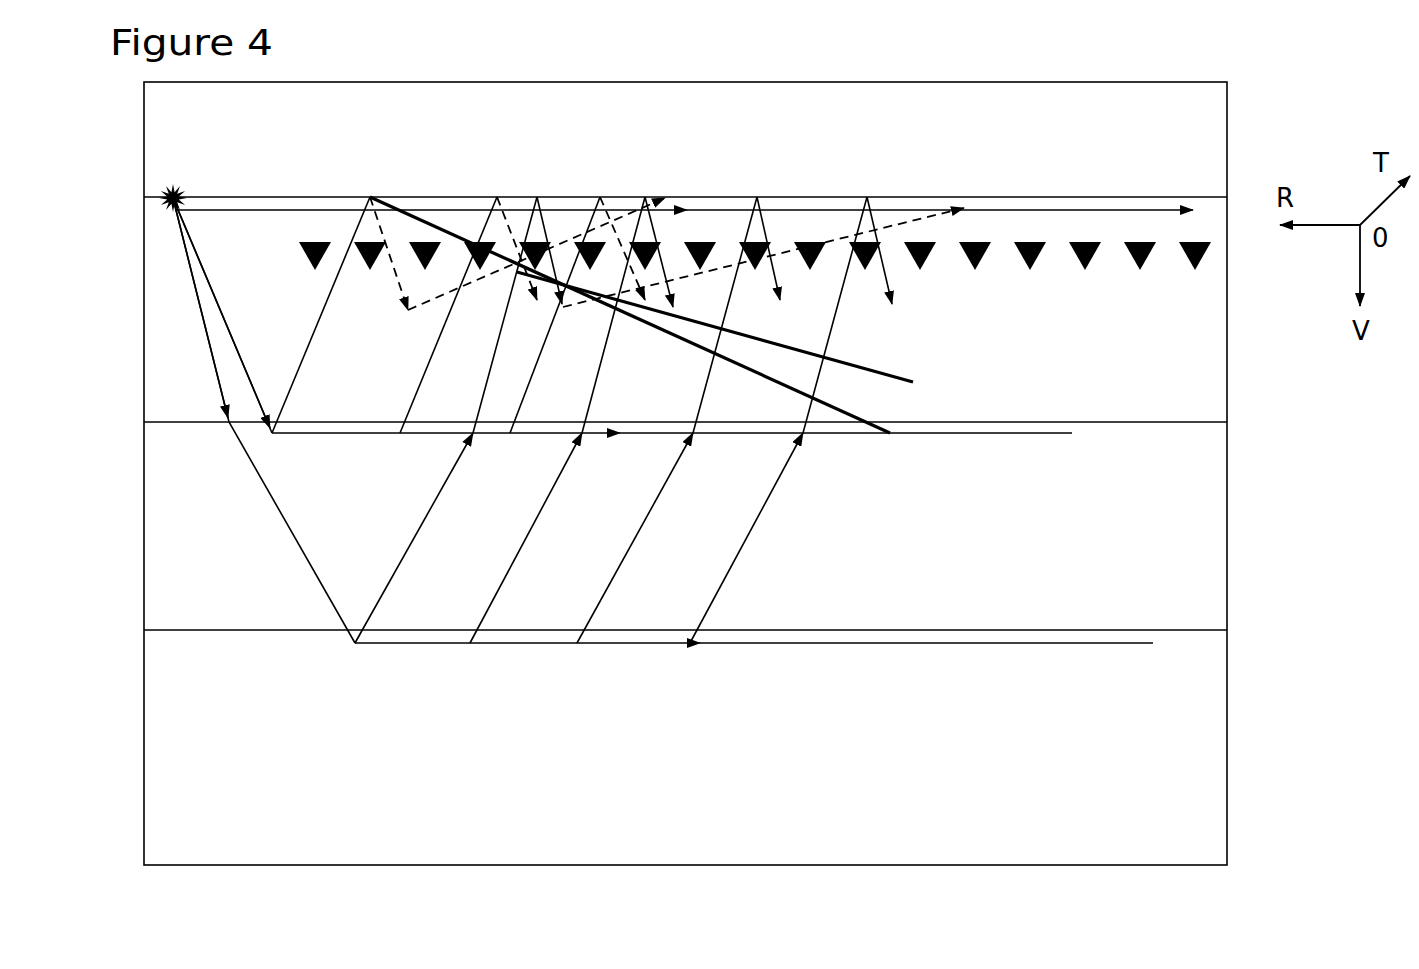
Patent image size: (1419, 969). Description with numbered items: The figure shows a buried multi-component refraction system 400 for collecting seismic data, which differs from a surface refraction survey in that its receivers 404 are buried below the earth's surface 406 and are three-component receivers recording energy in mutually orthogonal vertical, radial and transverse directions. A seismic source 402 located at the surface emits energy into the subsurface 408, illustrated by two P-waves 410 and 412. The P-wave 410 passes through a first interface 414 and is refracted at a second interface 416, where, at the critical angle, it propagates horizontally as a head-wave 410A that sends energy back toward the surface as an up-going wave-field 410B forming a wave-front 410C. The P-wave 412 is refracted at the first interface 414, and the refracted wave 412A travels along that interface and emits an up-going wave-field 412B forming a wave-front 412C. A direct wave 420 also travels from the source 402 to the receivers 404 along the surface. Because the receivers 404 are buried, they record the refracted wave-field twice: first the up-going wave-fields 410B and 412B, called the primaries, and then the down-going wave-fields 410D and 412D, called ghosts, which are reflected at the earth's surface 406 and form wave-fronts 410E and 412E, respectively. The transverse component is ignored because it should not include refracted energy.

The buried multi-component refraction system 400 is at (735, 137).
The seismic source 402 is at (175, 185).
The receivers 404 is at (1030, 243).
The earth's surface 406 is at (1112, 197).
The subsurface 408 is at (1108, 356).
The P-wave 410 is at (205, 323).
The head-wave 410A is at (631, 648).
The up-going wave-field 410B is at (742, 549).
The wave-front 410C is at (868, 368).
The down-going wave-field 410D is at (766, 228).
The wave-front 410E is at (913, 218).
The P-wave 412 is at (210, 292).
The refracted wave 412A is at (353, 436).
The up-going wave-field 412B is at (430, 360).
The wave-front 412C is at (834, 410).
The down-going wave-field 412D is at (507, 222).
The wave-front 412E is at (590, 236).
The first interface 414 is at (1174, 421).
The second interface 416 is at (1157, 630).
The direct wave 420 is at (451, 208).